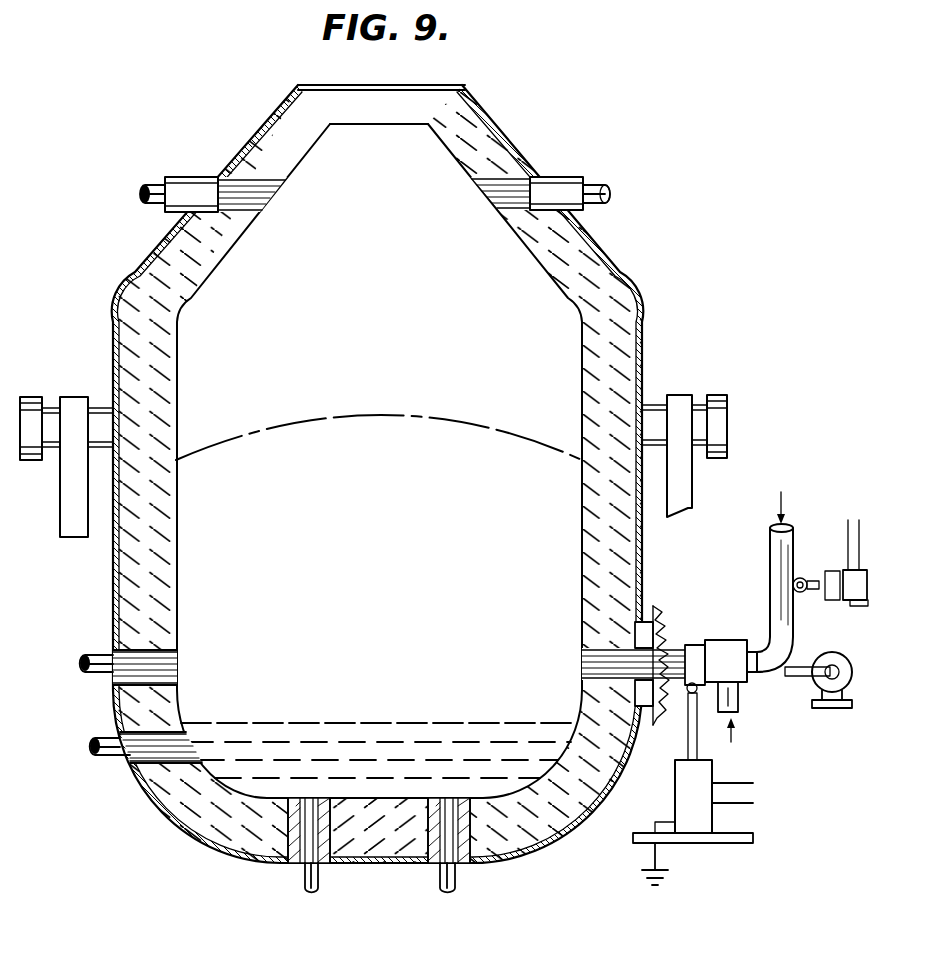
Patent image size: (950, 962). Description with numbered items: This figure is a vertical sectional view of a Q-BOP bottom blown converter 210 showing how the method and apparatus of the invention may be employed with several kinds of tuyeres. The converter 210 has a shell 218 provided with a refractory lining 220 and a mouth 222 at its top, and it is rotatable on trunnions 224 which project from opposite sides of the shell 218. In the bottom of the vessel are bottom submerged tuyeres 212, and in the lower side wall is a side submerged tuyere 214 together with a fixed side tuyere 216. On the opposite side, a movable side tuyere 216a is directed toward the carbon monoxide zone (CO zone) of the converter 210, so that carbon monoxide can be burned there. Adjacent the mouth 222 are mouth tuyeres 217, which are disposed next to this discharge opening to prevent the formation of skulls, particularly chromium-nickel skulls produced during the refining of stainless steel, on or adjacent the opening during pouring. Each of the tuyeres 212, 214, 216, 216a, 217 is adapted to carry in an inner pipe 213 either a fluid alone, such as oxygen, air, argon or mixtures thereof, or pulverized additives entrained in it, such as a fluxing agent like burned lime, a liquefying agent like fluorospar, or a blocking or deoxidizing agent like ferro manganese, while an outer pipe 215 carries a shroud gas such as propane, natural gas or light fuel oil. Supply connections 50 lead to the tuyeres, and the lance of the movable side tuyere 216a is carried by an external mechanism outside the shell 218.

The gas supply pipe 50 is at (145, 185).
The bottom blown converter 210 is at (420, 454).
The bottom submerged tuyeres 212 is at (300, 866).
The inner pipe 213 is at (276, 195).
The side submerged tuyere 214 is at (131, 766).
The outer pipe 215 is at (268, 188).
The fixed side tuyere 216 is at (113, 677).
The movable side tuyere 216a is at (724, 636).
The mouth tuyeres 217 is at (191, 177).
The shell 218 is at (640, 336).
The refractory lining 220 is at (618, 308).
The mouth 222 is at (440, 97).
The trunnions 224 is at (73, 406).